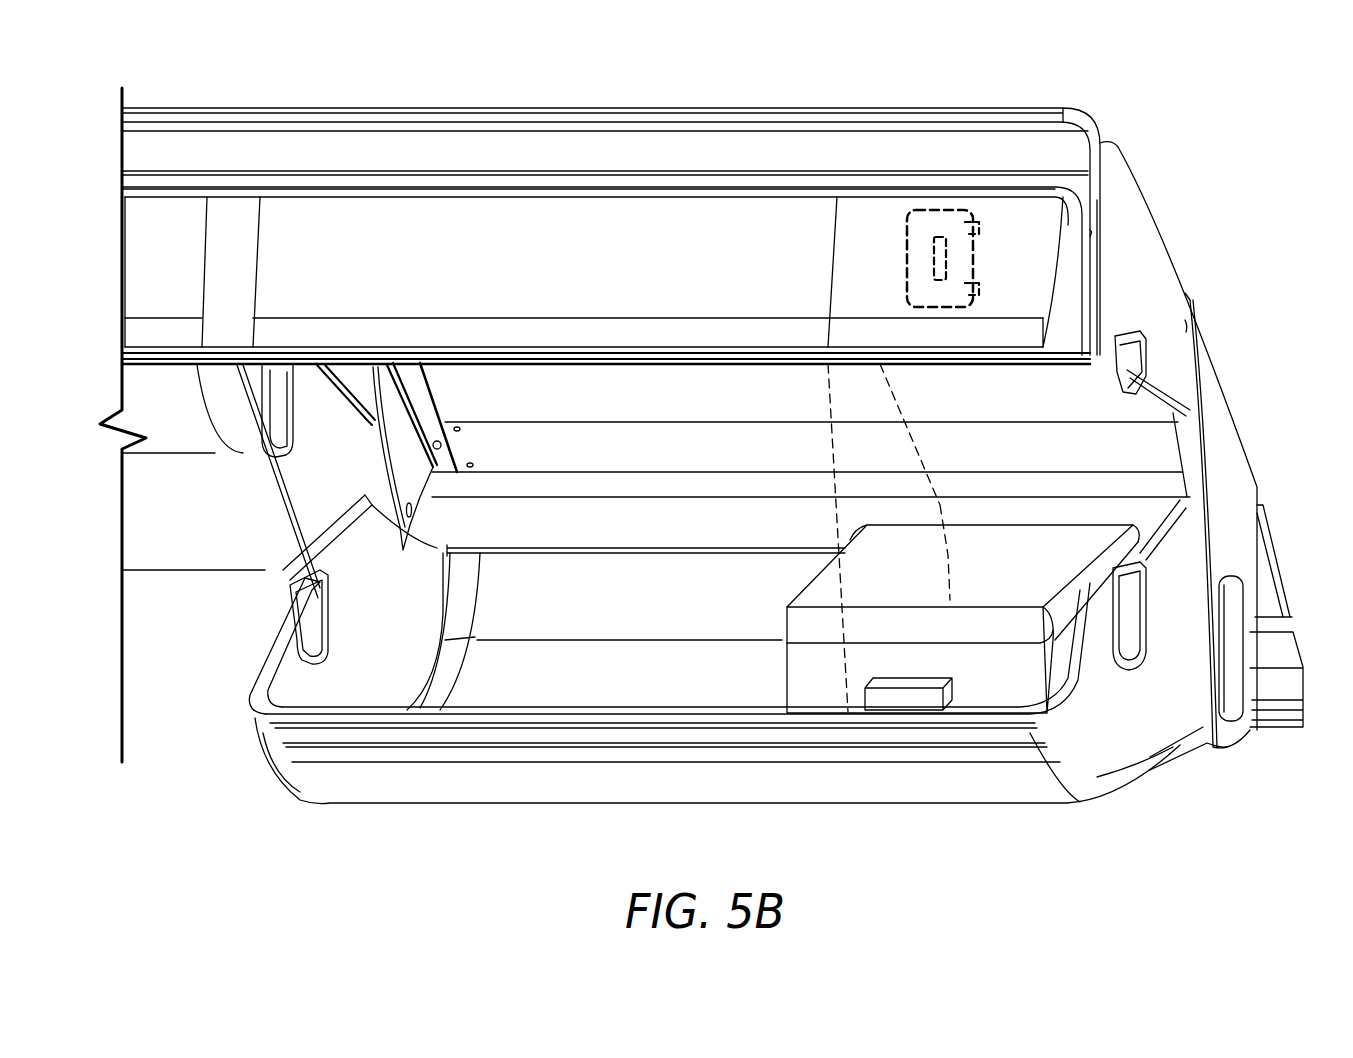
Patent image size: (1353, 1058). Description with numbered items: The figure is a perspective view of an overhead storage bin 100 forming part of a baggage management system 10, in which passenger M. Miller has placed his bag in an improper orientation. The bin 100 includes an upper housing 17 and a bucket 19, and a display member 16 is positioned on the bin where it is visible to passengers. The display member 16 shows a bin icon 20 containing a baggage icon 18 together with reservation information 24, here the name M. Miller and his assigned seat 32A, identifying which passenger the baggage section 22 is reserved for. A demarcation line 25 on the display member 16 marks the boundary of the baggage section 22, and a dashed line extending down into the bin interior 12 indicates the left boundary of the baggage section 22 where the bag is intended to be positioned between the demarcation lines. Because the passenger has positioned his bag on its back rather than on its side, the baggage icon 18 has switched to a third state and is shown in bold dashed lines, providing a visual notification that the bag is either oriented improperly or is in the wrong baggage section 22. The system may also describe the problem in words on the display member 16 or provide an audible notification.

The baggage management system 10 is at (1225, 112).
The bin interior 12 is at (724, 613).
The display member 16 is at (1078, 217).
The upper housing 17 is at (1115, 165).
The baggage icon 18 is at (940, 216).
The bucket 19 is at (1002, 787).
The bin icon 20 is at (1050, 240).
The baggage section 22 is at (860, 212).
The reservation information 24 is at (1037, 333).
The demarcation line 25 is at (829, 224).
The seat 32A is at (935, 337).
The bin 100 is at (1143, 263).